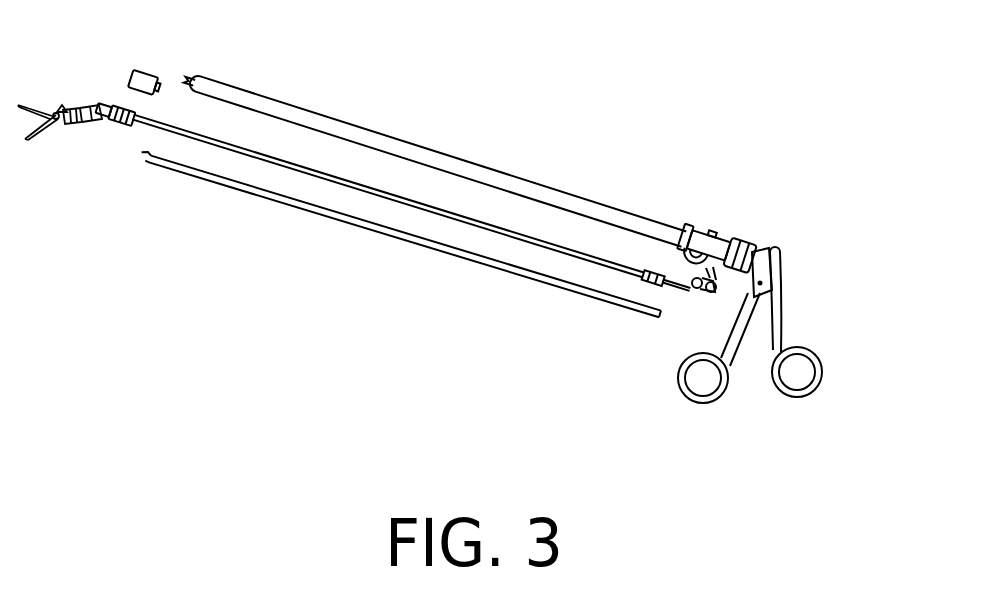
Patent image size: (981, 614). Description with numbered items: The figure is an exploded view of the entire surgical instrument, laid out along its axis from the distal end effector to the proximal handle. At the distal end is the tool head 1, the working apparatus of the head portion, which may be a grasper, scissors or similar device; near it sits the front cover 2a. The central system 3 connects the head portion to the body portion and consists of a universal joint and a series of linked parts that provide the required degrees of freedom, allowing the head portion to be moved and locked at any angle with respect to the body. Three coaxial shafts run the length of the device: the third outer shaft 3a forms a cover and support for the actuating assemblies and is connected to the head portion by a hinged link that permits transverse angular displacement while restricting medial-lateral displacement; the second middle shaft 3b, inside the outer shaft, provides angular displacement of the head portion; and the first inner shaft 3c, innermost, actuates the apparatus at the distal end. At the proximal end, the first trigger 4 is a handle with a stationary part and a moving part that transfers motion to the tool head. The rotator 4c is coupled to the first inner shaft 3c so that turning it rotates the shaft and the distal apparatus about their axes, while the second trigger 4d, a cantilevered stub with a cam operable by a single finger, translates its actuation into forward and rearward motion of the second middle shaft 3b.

The tool head 1 is at (44, 148).
The front cover 2a is at (143, 70).
The central system 3 is at (108, 135).
The third outer shaft 3a is at (363, 118).
The second middle shaft 3b is at (257, 168).
The first inner shaft 3c is at (160, 178).
The first trigger 4 is at (822, 384).
The rotator 4c is at (752, 229).
The second trigger 4d is at (720, 289).